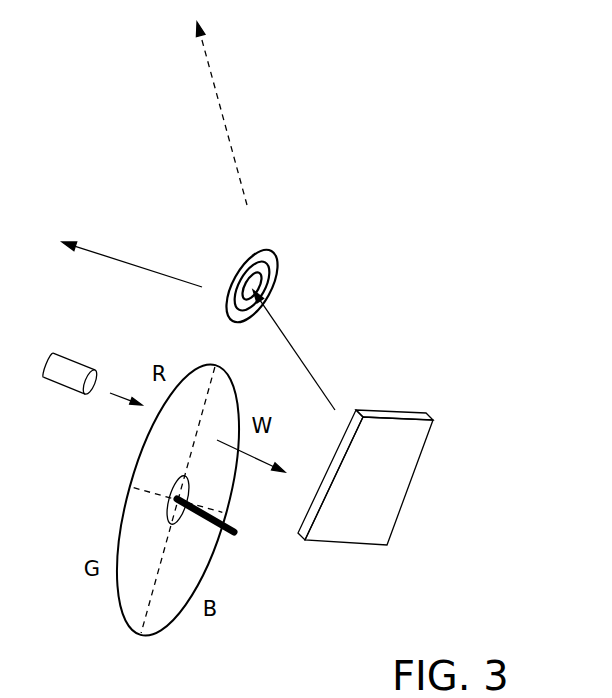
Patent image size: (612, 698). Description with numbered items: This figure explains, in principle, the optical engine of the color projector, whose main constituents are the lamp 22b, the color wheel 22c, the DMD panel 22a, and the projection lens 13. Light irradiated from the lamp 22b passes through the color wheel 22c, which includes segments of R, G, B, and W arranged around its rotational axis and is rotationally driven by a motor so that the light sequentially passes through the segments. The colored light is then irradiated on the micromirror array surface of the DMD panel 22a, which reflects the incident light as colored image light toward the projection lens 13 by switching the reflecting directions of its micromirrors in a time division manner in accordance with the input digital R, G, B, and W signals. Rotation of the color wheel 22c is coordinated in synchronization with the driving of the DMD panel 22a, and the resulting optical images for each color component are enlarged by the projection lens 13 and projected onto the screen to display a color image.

The projection lens 13 is at (275, 250).
The DMD panel 22a is at (401, 418).
The lamp 22b is at (78, 357).
The color wheel 22c is at (126, 629).